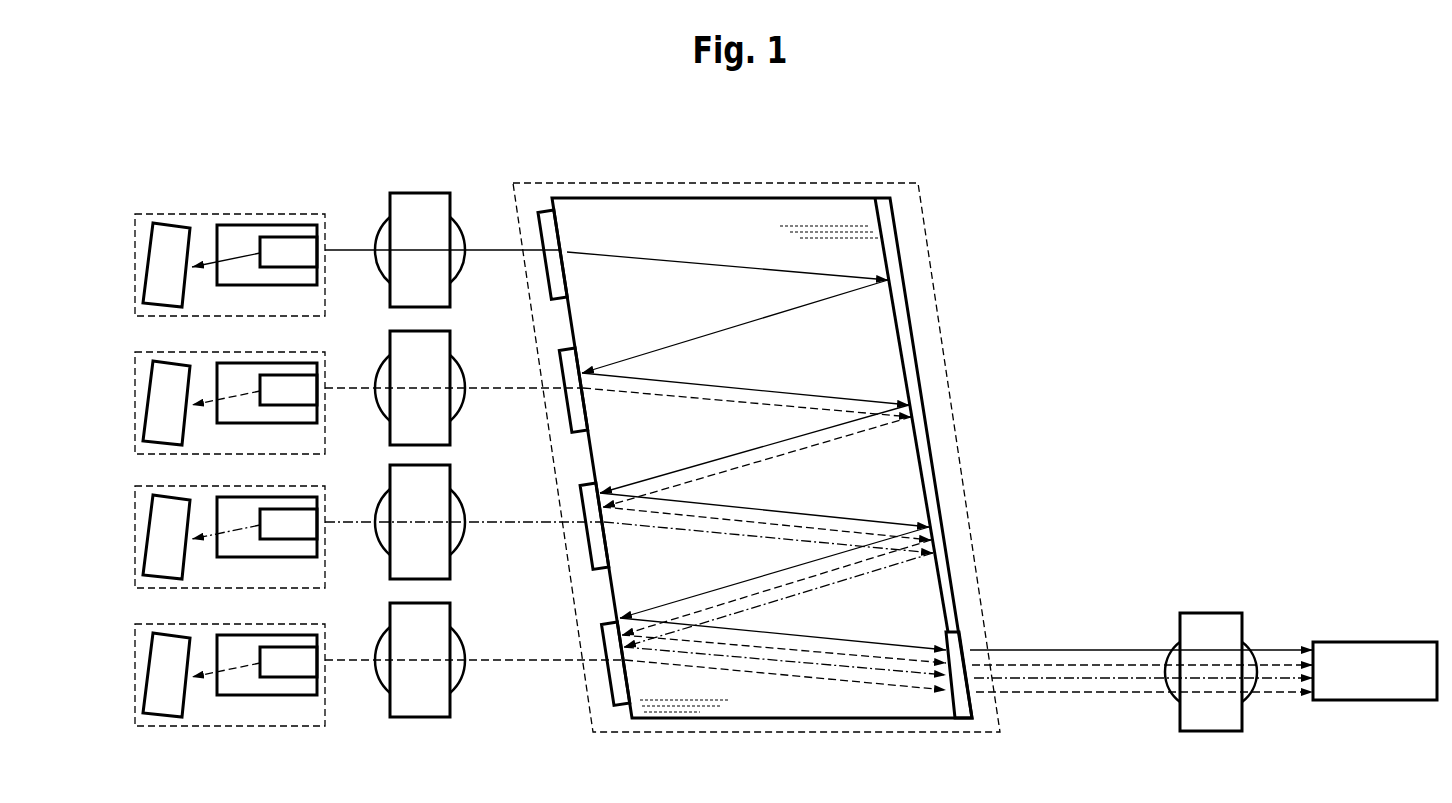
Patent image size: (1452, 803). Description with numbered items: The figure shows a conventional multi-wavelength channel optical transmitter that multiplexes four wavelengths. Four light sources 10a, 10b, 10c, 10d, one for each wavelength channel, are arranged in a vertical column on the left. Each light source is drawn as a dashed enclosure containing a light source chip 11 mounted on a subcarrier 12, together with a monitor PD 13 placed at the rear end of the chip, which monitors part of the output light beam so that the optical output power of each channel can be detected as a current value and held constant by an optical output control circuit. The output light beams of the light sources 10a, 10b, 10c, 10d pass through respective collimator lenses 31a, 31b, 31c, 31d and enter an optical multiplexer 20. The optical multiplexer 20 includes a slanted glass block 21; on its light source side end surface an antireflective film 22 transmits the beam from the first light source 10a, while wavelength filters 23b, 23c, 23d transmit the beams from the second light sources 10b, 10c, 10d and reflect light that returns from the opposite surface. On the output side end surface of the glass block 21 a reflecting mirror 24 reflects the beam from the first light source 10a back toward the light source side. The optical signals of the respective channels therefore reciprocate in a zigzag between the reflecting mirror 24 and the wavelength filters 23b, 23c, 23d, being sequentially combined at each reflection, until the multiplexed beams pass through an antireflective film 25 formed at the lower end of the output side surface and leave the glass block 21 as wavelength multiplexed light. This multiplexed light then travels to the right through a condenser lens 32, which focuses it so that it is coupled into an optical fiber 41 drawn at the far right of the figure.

The first light source 10a is at (194, 240).
The second light source 10b is at (135, 396).
The second light source 10c is at (135, 530).
The second light source 10d is at (135, 668).
The light source chip 11 is at (280, 237).
The subcarrier 12 is at (228, 225).
The monitor PD 13 is at (172, 222).
The optical multiplexer 20 is at (757, 430).
The glass block 21 is at (704, 198).
The antireflective film 22 is at (542, 211).
The wavelength filter 23b is at (559, 351).
The wavelength filter 23c is at (580, 486).
The wavelength filter 23d is at (601, 625).
The reflecting mirror 24 is at (936, 472).
The antireflective film 25 is at (968, 641).
The collimator lens 31a is at (390, 195).
The collimator lens 31b is at (390, 333).
The collimator lens 31c is at (390, 467).
The collimator lens 31d is at (390, 605).
The condenser lens 32 is at (1207, 613).
The optical fiber 41 is at (1370, 642).